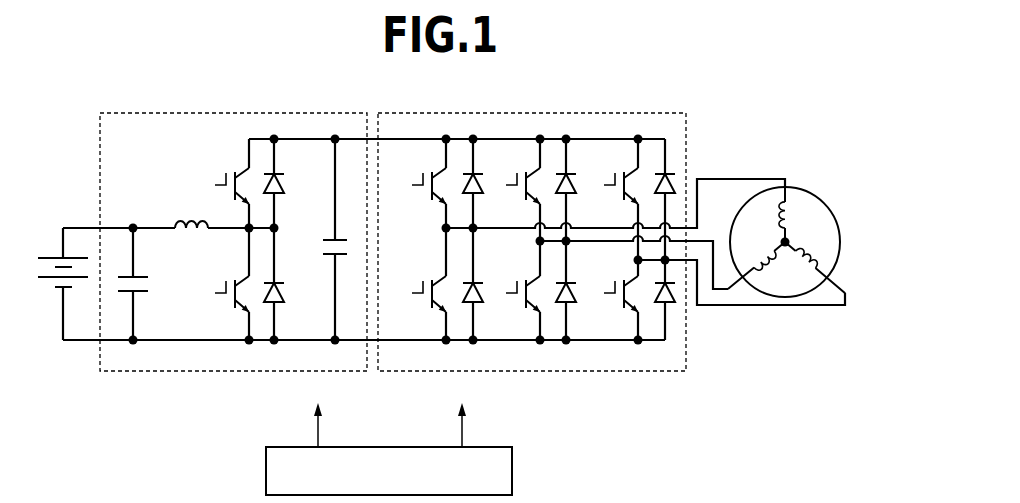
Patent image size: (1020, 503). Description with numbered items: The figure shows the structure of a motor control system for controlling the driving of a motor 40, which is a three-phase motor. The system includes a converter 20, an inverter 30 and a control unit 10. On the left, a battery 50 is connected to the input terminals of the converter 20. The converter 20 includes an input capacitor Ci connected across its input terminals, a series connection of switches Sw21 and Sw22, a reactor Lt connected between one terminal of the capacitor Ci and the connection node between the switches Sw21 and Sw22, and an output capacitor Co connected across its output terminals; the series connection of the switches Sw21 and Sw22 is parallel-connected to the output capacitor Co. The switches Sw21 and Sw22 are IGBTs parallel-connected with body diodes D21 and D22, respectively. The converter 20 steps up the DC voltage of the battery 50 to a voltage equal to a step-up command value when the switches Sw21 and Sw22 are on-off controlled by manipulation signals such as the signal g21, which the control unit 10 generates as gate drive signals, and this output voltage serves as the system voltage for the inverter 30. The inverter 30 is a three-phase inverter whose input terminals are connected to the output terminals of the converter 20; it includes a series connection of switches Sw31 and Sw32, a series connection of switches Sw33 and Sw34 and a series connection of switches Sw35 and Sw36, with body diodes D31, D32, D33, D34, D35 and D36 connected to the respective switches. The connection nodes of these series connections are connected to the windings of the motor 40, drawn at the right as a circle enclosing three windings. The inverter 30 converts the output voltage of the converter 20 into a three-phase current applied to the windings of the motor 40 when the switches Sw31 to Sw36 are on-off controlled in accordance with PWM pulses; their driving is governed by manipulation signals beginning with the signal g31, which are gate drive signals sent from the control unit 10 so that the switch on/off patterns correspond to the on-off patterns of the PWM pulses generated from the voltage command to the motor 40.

The control unit 10 is at (512, 470).
The converter 20 is at (235, 111).
The inverter 30 is at (519, 111).
The motor 40 is at (806, 190).
The battery 50 is at (58, 255).
The reactor Lt is at (176, 222).
The input capacitor Ci is at (137, 272).
The output capacitor Co is at (338, 239).
The switch Sw21 is at (225, 173).
The switch Sw22 is at (225, 281).
The body diode D21 is at (277, 197).
The body diode D22 is at (277, 303).
The switch Sw31 is at (423, 173).
The switch Sw32 is at (423, 281).
The switch Sw33 is at (517, 173).
The switch Sw34 is at (517, 281).
The switch Sw35 is at (615, 173).
The switch Sw36 is at (615, 281).
The body diode D31 is at (476, 197).
The body diode D32 is at (476, 303).
The body diode D33 is at (569, 197).
The body diode D34 is at (569, 303).
The body diode D35 is at (670, 172).
The body diode D36 is at (668, 304).
The manipulation signal g21 is at (298, 414).
The manipulation signal g31 is at (458, 414).